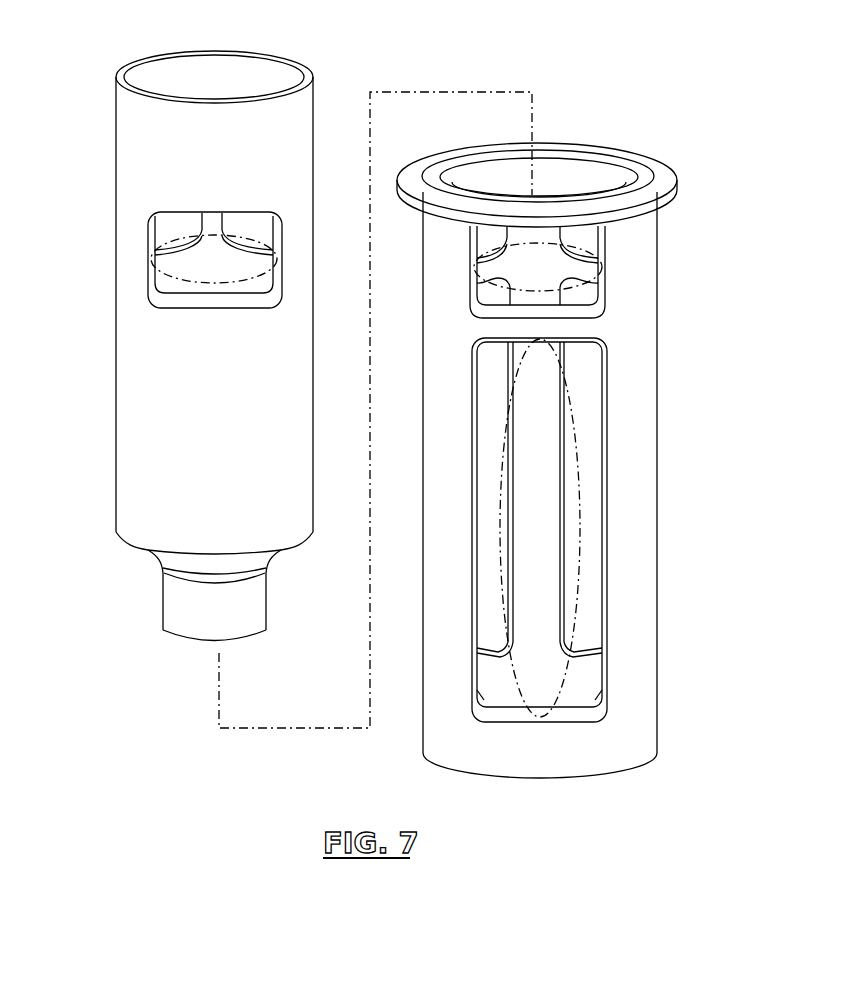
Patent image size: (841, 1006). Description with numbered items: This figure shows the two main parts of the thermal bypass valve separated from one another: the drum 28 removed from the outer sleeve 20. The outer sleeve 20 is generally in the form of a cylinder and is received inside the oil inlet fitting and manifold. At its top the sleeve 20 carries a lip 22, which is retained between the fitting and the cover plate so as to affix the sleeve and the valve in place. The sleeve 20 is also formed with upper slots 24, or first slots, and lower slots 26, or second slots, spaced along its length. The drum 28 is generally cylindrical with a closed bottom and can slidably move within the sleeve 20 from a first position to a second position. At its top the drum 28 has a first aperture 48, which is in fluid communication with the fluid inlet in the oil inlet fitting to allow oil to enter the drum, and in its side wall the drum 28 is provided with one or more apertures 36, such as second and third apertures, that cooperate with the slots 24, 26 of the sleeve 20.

The outer sleeve 20 is at (630, 342).
The lip 22 is at (662, 172).
The upper slots 24 is at (572, 287).
The lower slots 26 is at (578, 497).
The drum 28 is at (137, 427).
The apertures 36 is at (183, 282).
The first aperture 48 is at (187, 77).